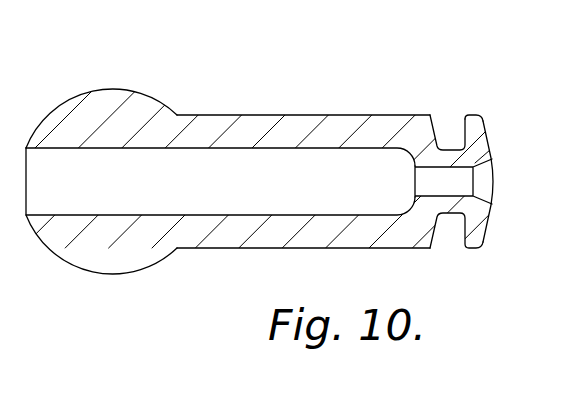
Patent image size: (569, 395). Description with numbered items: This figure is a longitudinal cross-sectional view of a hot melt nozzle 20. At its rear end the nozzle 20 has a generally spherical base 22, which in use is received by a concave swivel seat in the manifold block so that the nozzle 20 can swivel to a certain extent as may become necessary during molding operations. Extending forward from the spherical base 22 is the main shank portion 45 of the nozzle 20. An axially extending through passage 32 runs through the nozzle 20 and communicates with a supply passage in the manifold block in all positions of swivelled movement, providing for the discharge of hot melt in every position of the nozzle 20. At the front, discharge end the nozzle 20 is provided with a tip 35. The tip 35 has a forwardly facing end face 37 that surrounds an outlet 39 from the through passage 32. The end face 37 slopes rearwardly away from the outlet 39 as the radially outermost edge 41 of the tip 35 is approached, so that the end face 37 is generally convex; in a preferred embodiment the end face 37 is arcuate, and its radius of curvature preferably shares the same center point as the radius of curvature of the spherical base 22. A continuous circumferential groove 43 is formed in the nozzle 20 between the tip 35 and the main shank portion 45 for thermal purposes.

The nozzle 20 is at (284, 166).
The spherical base 22 is at (107, 100).
The main shank portion 45 is at (218, 123).
The through passage 32 is at (308, 162).
The circumferential groove 43 is at (447, 127).
The radially outermost edge 41 is at (473, 113).
The tip 35 is at (482, 152).
The outlet 39 is at (485, 183).
The end face 37 is at (493, 223).